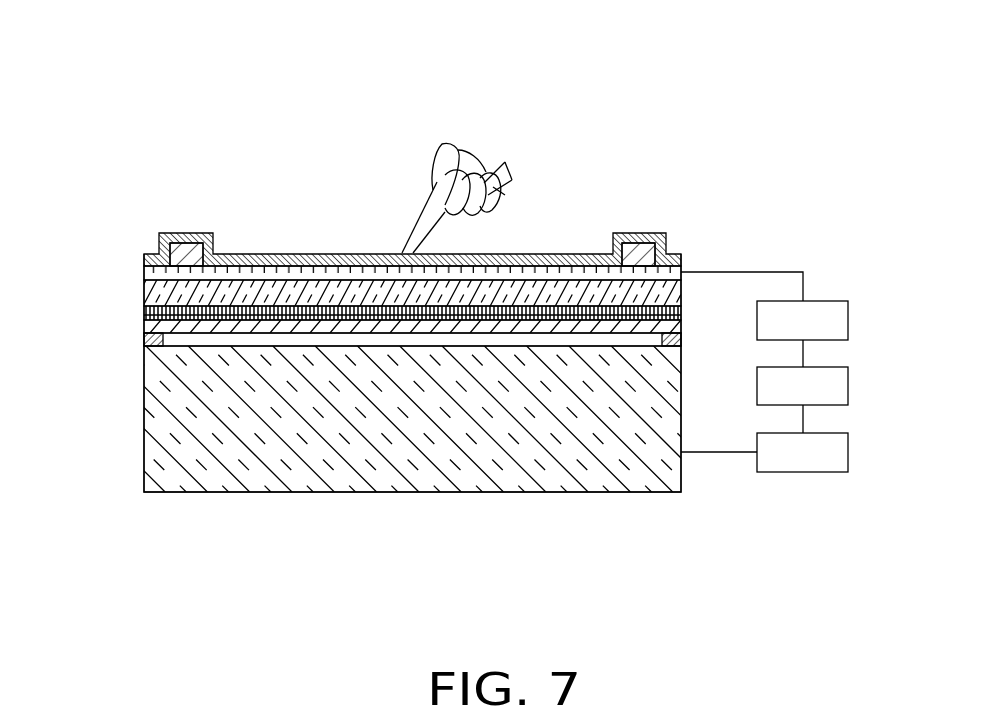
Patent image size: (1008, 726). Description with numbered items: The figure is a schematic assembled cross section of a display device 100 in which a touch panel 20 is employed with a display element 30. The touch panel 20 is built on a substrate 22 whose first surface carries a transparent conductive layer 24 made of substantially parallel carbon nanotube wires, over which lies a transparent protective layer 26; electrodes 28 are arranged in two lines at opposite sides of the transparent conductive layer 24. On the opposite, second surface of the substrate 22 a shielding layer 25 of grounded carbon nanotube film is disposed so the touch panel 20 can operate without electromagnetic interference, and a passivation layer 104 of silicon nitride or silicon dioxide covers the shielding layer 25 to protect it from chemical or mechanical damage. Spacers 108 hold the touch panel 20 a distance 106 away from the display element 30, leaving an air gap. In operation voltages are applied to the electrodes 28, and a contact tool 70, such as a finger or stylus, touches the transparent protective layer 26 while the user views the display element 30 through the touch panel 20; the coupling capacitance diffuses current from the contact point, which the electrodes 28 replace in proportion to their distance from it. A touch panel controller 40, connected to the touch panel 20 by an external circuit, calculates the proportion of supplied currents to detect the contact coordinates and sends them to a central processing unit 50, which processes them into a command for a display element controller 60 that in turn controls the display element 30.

The display device 100 is at (433, 52).
The touch panel 20 is at (356, 279).
The transparent protective layer 26 is at (144, 256).
The transparent conductive layer 24 is at (144, 271).
The substrate 22 is at (144, 292).
The shielding layer 25 is at (373, 316).
The electrodes 28 is at (645, 242).
The passivation layer 104 is at (144, 329).
The distance 106 is at (638, 338).
The spacers 108 is at (144, 338).
The display element 30 is at (163, 412).
The contact tool 70 is at (432, 173).
The touch panel controller 40 is at (848, 318).
The central processing unit 50 is at (848, 383).
The display element controller 60 is at (848, 452).